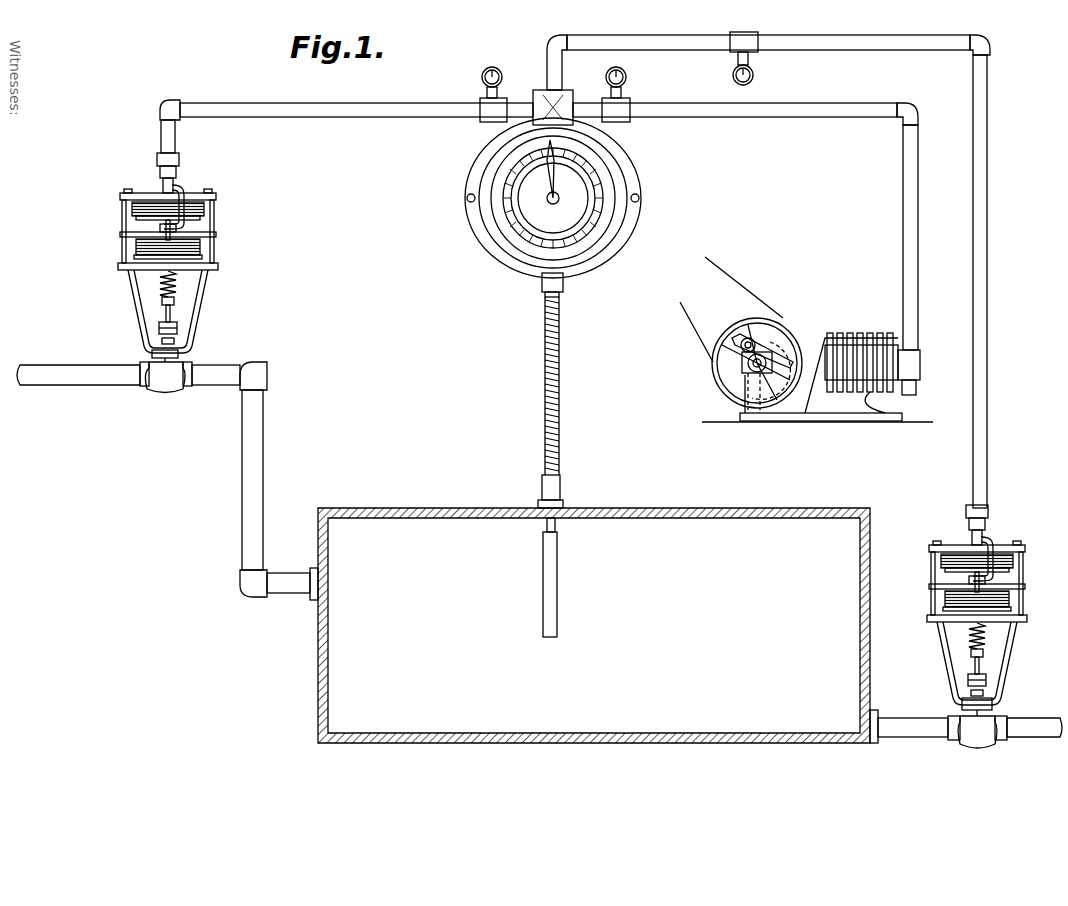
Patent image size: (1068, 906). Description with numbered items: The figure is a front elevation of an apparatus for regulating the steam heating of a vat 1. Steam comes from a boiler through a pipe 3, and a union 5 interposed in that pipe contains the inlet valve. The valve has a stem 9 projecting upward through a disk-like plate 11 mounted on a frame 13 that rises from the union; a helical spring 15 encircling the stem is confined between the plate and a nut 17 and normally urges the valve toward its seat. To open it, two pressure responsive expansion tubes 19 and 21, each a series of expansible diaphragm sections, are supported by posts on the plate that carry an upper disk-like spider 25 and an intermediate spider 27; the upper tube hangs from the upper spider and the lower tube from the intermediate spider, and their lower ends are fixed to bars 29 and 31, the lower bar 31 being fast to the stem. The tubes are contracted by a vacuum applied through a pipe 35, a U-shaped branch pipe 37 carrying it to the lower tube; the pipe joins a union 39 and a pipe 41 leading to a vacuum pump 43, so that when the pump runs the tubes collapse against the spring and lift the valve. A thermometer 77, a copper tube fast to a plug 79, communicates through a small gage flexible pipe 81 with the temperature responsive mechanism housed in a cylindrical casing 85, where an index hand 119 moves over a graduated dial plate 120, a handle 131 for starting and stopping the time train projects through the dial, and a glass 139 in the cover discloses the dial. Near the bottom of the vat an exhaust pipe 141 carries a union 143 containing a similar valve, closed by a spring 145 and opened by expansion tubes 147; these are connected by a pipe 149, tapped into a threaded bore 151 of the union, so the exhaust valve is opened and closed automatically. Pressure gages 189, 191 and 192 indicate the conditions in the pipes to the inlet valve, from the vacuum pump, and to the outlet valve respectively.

The vat 1 is at (318, 677).
The pipe 3 is at (242, 484).
The union 5 is at (165, 385).
The stem 9 is at (551, 502).
The disk-like plate 11 is at (180, 267).
The frame 13 is at (572, 487).
The helical spring 15 is at (141, 284).
The nut 17 is at (196, 312).
The expansion tube 19 is at (187, 212).
The expansion tube 21 is at (189, 247).
The upper disk-like spider 25 is at (148, 226).
The intermediate spider 27 is at (146, 234).
The bar 29 is at (201, 229).
The lower bar 31 is at (146, 257).
The pipe 35 is at (373, 117).
The U-shaped branch pipe 37 is at (578, 374).
The union 39 is at (547, 102).
The pipe 41 is at (787, 117).
The vacuum pump 43 is at (806, 339).
The thermometer 77 is at (555, 568).
The plug 79 is at (560, 487).
The flexible pipe 81 is at (559, 389).
The cylindrical casing 85 is at (552, 205).
The index hand 119 is at (548, 183).
The dial plate 120 is at (598, 209).
The handle 131 is at (615, 181).
The glass 139 is at (520, 207).
The exhaust pipe 141 is at (1033, 724).
The union 143 is at (985, 745).
The spring 145 is at (1013, 648).
The expansion tubes 147 is at (952, 581).
The pipe 149 is at (987, 310).
The threaded bore 151 is at (557, 90).
The pressure gage 189 is at (481, 77).
The pressure gage 191 is at (627, 77).
The pressure gage 192 is at (754, 75).